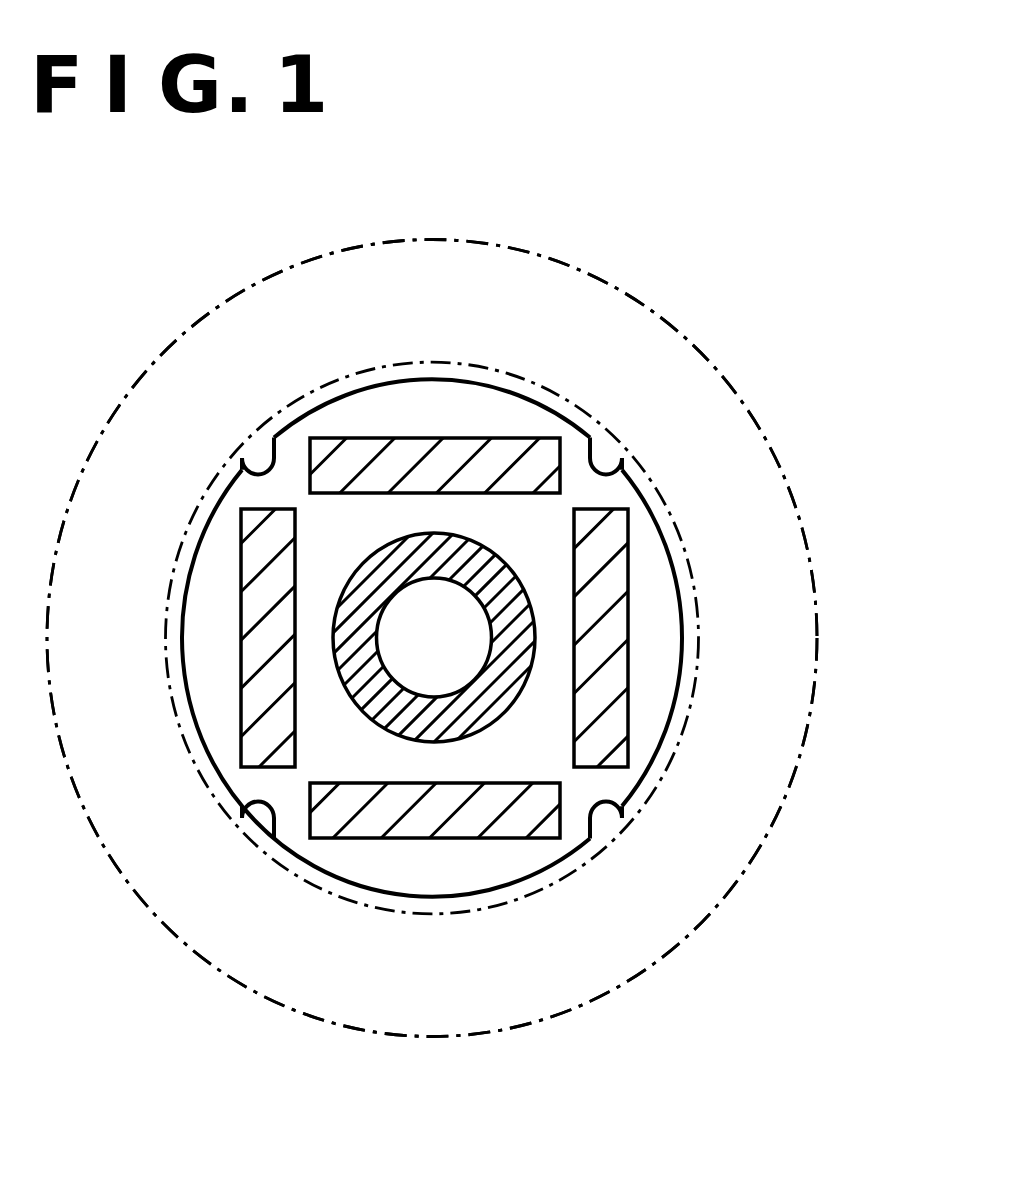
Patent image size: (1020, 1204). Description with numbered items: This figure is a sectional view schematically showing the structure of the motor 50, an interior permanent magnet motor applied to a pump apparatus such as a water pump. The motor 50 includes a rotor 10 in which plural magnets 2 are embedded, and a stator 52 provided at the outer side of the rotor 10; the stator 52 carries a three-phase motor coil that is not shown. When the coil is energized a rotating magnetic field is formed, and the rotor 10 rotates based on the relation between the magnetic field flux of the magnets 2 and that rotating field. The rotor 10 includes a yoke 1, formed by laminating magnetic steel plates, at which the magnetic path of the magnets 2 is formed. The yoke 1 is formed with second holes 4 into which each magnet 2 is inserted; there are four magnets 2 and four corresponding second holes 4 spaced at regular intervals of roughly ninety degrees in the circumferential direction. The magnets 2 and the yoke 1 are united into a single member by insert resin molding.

The motor 50 is at (740, 293).
The stator 52 is at (766, 438).
The rotor 10 is at (258, 456).
The yoke 1 is at (671, 633).
The magnet 2 is at (622, 462).
The second hole 4 is at (504, 478).